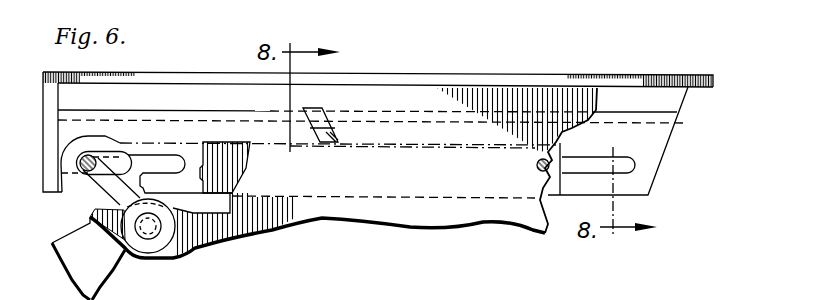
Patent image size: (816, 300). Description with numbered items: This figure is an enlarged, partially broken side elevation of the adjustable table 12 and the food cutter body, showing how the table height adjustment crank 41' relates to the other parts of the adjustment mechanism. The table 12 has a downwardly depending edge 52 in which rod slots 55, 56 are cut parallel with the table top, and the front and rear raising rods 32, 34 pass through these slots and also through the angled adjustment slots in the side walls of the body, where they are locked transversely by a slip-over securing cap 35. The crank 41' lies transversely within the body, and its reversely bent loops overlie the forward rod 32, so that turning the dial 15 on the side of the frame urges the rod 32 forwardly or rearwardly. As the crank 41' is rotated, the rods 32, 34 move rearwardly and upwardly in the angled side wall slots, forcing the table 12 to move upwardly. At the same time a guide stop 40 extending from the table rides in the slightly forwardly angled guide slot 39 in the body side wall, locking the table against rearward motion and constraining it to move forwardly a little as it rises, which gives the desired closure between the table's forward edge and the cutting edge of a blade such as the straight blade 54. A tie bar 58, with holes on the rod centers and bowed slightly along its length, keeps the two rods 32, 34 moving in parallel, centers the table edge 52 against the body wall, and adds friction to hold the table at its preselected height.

The adjustable table 12 is at (585, 75).
The dial 15 is at (63, 267).
The front raising rod 32 is at (82, 178).
The rear raising rod 34 is at (537, 165).
The slip-over securing cap 35 is at (174, 242).
The guide slot 39 is at (320, 110).
The guide stop 40 is at (333, 143).
The crank 41' is at (119, 212).
The downwardly depending edge of the table 52 is at (160, 117).
The straight blade 54 is at (670, 148).
The rod slot 55 is at (601, 160).
The rod slot 56 is at (157, 160).
The tie bar 58 is at (197, 150).